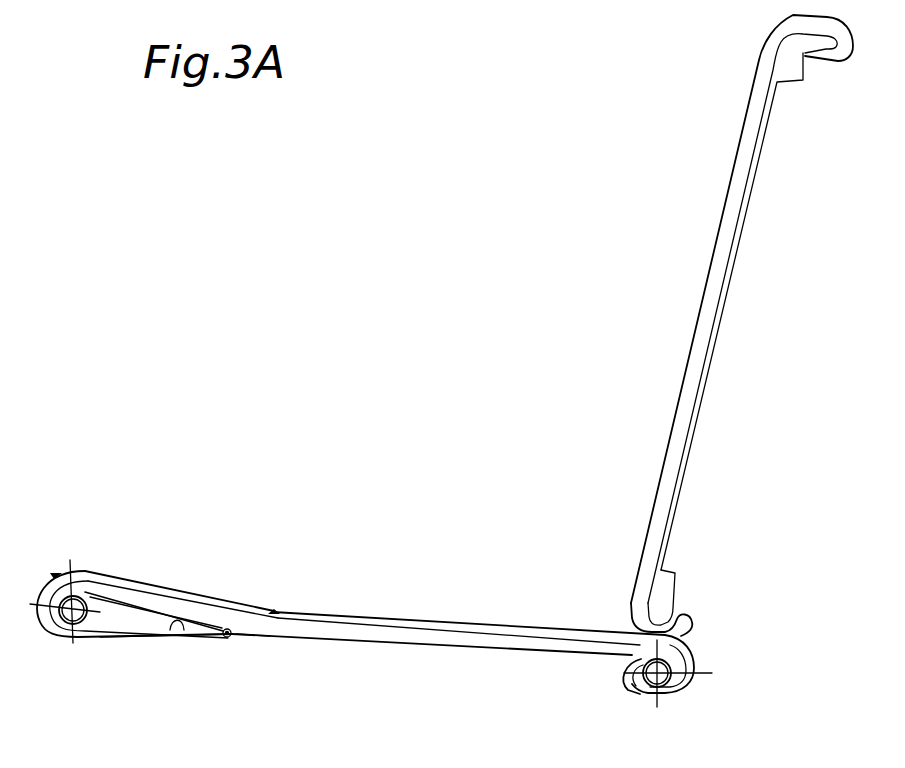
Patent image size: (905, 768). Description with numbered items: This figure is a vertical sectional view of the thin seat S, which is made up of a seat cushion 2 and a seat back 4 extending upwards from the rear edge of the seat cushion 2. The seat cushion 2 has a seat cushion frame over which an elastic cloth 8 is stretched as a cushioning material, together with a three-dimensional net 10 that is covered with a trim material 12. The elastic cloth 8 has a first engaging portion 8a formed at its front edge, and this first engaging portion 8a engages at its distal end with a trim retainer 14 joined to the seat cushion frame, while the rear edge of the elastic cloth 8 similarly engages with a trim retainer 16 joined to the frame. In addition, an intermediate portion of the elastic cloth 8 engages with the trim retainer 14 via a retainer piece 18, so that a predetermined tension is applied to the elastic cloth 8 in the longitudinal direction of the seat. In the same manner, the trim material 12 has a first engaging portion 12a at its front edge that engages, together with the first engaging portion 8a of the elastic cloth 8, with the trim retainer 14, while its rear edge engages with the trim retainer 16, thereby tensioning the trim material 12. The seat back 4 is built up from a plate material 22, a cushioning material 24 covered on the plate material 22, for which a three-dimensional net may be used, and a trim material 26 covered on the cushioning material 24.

The thin seat S is at (402, 272).
The seat cushion 2 is at (324, 594).
The seat back 4 is at (672, 324).
The elastic cloth 8 is at (196, 607).
The first engaging portion 8a is at (177, 629).
The 3-D net 10 is at (166, 600).
The trim material 12 is at (133, 581).
The first engaging portion 12a is at (138, 641).
The trim retainer 14 is at (228, 640).
The trim retainer 16 is at (626, 688).
The retainer piece 18 is at (254, 639).
The plate material 22 is at (702, 402).
The cushioning material 24 is at (708, 308).
The trim material 26 is at (716, 233).